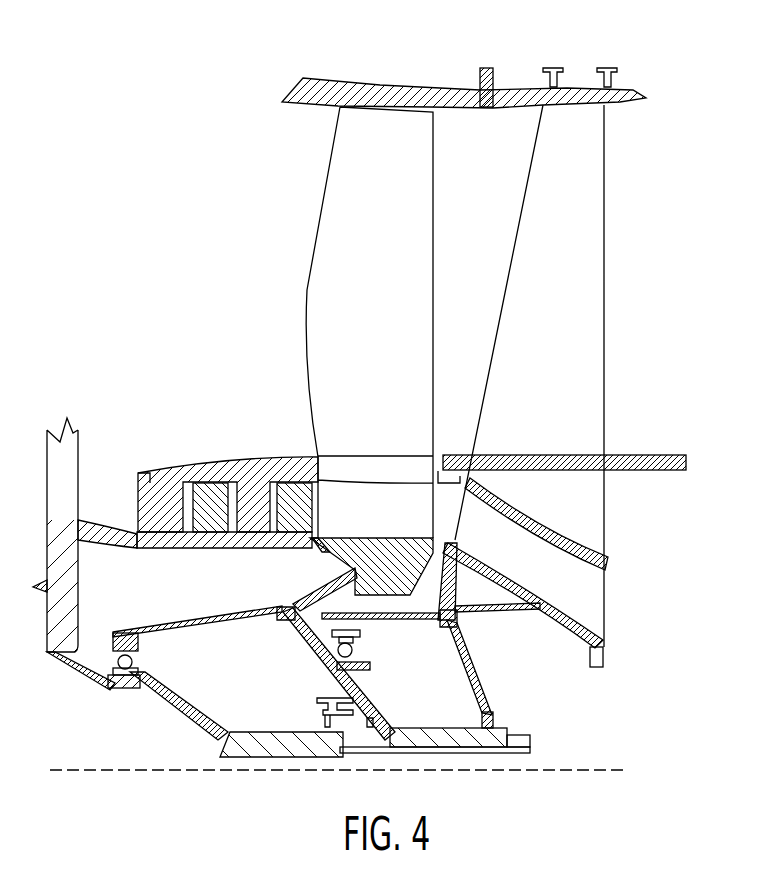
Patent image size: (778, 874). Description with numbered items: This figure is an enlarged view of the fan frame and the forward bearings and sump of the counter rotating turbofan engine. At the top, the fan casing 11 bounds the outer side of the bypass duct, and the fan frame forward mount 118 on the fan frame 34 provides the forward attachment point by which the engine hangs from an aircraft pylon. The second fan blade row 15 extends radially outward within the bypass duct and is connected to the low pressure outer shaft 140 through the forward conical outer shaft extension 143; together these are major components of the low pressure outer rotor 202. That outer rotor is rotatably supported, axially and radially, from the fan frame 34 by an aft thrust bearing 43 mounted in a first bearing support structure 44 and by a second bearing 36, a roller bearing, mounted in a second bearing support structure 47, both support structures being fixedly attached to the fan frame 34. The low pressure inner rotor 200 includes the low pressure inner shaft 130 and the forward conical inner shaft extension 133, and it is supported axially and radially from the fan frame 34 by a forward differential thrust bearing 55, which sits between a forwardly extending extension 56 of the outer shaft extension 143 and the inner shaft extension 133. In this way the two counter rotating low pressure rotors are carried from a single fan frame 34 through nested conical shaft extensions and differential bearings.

The fan casing 11 is at (425, 89).
The fan frame forward mount 118 is at (572, 78).
The second fan blade row 15 is at (309, 265).
The fan frame 34 is at (605, 508).
The forwardly extending extension 56 is at (207, 622).
The forward differential thrust bearing 55 is at (136, 660).
The forward conical outer shaft extension 143 is at (318, 652).
The aft thrust bearing 43 is at (356, 650).
The first bearing support structure 44 is at (431, 611).
The second bearing support structure 47 is at (468, 668).
The second bearing 36 is at (497, 716).
The low pressure outer rotor 202 is at (413, 728).
The low pressure outer shaft 140 is at (522, 738).
The low pressure inner shaft 130 is at (507, 749).
The forward conical inner shaft extension 133 is at (180, 716).
The low pressure inner rotor 200 is at (245, 757).